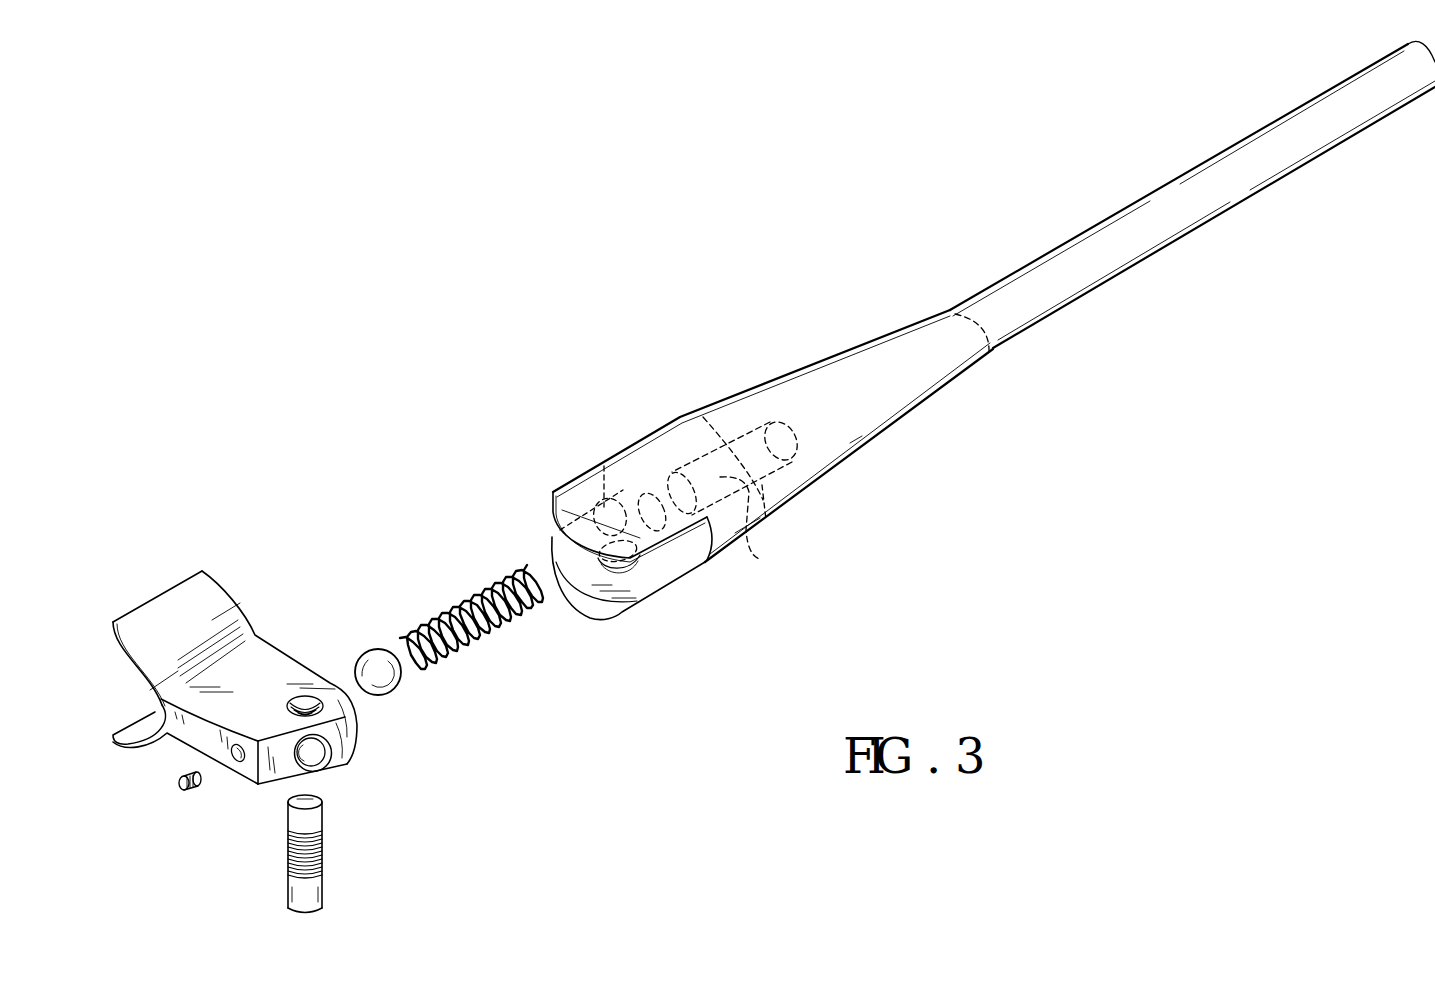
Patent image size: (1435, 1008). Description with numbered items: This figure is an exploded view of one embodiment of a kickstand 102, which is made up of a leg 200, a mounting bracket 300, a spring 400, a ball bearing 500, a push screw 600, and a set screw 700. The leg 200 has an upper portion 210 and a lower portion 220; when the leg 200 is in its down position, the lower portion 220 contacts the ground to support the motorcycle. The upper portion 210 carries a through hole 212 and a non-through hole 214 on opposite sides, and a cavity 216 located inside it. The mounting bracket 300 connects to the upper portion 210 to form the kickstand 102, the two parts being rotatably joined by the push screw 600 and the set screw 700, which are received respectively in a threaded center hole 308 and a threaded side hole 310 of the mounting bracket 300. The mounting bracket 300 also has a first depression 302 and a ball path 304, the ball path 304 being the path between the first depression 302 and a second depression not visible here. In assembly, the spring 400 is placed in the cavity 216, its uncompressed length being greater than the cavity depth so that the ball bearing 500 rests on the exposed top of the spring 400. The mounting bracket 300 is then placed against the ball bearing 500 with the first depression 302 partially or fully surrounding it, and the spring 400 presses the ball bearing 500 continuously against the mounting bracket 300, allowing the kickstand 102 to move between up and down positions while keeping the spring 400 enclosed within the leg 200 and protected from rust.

The kickstand 102 is at (707, 240).
The leg 200 is at (927, 279).
The upper portion 210 is at (584, 456).
The through hole 212 is at (642, 567).
The non-through hole 214 is at (690, 577).
The cavity 216 is at (760, 559).
The lower portion 220 is at (1200, 163).
The mounting bracket 300 is at (278, 560).
The first depression 302 is at (312, 755).
The ball path 304 is at (342, 747).
The threaded center hole 308 is at (304, 697).
The threaded side hole 310 is at (238, 763).
The spring 400 is at (488, 632).
The ball bearing 500 is at (398, 692).
The push screw 600 is at (325, 888).
The set screw 700 is at (203, 792).